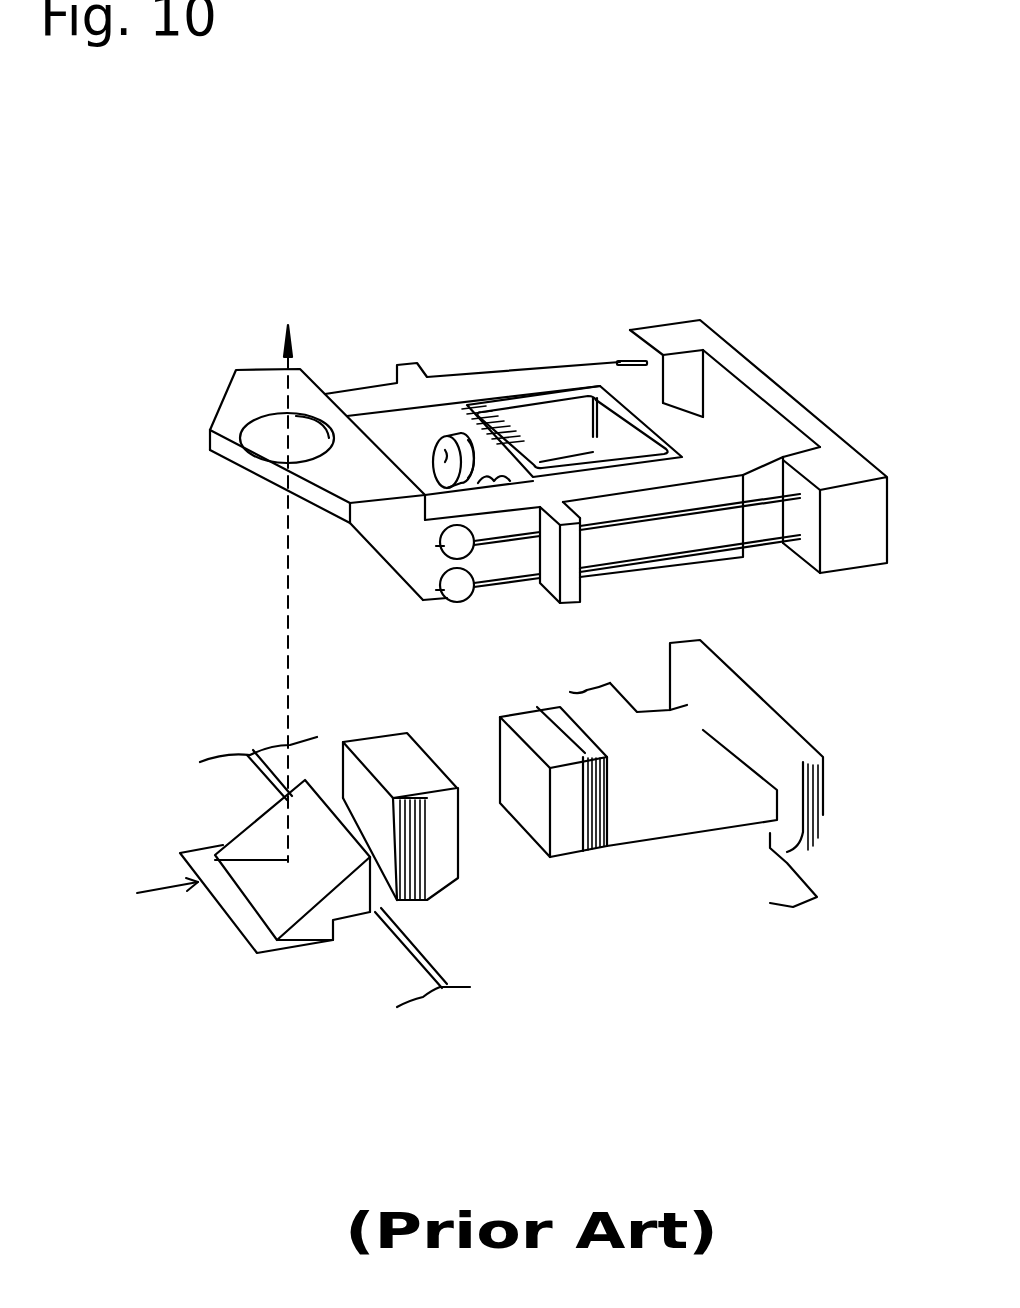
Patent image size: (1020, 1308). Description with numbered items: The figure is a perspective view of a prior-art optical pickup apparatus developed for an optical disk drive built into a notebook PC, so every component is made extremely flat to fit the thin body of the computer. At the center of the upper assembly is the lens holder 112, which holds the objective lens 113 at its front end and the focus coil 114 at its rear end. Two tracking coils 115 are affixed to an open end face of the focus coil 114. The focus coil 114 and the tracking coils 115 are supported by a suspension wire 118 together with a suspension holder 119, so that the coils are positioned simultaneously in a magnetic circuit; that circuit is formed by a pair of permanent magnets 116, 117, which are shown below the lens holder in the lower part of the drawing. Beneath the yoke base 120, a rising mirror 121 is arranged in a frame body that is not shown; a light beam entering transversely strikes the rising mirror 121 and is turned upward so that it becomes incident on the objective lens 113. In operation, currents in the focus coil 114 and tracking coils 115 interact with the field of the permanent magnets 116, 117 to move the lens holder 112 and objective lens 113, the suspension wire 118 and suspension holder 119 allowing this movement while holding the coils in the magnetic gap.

The lens holder 112 is at (371, 390).
The objective lens 113 is at (267, 437).
The focus coil 114 is at (550, 393).
The tracking coil 115 is at (507, 480).
The permanent magnet 116 is at (443, 857).
The permanent magnet 117 is at (570, 837).
The suspension wire 118 is at (620, 360).
The suspension holder 119 is at (797, 410).
The yoke base 120 is at (747, 887).
The rising mirror 121 is at (293, 890).